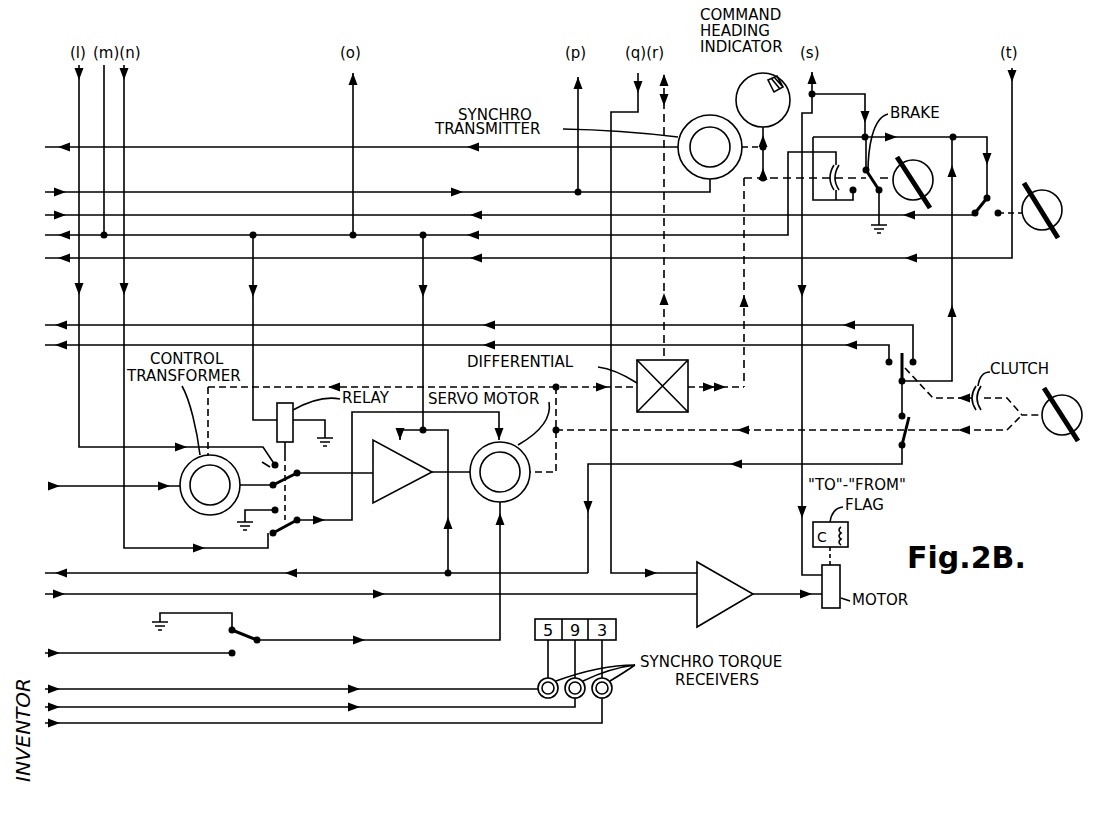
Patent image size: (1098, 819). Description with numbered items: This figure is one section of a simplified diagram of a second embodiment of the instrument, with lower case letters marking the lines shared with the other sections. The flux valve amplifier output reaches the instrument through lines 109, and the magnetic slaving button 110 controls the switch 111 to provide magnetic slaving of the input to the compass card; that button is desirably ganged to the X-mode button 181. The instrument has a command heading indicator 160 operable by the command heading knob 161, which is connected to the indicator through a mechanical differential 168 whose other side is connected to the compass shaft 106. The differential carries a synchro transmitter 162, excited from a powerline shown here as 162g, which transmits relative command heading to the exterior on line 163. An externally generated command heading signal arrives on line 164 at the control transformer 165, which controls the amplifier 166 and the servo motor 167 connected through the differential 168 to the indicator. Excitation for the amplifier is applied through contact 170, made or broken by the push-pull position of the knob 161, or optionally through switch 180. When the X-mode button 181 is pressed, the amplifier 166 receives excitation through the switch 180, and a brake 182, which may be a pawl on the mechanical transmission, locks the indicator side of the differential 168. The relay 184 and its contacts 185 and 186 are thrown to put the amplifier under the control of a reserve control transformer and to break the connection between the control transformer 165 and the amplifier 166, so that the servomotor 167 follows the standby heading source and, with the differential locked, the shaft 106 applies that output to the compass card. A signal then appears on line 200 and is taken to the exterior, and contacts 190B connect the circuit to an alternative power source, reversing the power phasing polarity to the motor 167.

The line 163 is at (74, 146).
The synchro transmitter input line 162g is at (62, 192).
The lines 109 is at (60, 214).
The line 200 is at (72, 237).
The command heading indicator 160 is at (746, 85).
The synchro transmitter 162 is at (690, 170).
The brake 182 is at (836, 165).
The X-mode button 181 is at (917, 167).
The switch 180 is at (872, 193).
The switch 111 is at (980, 216).
The magnetic slaving button 110 is at (1064, 191).
The compass shaft 106 is at (664, 290).
The mechanical differential 168 is at (688, 402).
The relay 184 is at (290, 403).
The contact 185 is at (272, 460).
The line 164 is at (77, 489).
The control transformer 165 is at (200, 505).
The amplifier 166 is at (400, 490).
The servo motor 167 is at (520, 496).
The contact 186 is at (288, 540).
The contact 170 is at (910, 442).
The command heading knob 161 is at (1050, 432).
The contacts 190B is at (243, 648).